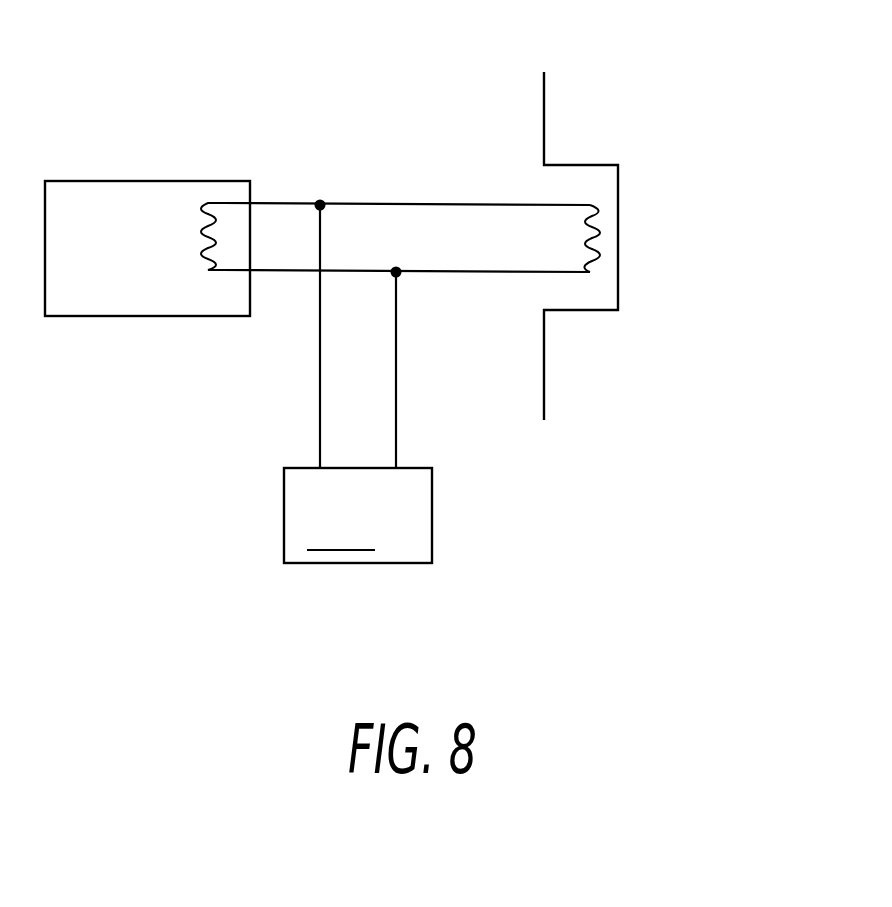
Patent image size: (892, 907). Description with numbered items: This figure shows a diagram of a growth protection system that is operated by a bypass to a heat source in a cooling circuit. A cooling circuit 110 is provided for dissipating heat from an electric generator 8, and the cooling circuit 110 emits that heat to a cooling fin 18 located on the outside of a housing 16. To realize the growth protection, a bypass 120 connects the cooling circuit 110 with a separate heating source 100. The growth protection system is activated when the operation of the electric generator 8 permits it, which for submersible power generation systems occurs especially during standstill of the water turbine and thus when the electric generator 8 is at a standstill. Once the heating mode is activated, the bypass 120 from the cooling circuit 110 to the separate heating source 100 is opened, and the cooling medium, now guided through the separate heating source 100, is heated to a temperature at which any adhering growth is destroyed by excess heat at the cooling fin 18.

The electric generator 8 is at (147, 248).
The housing 16 is at (544, 117).
The cooling fin 18 is at (618, 243).
The separate heating source 100 is at (358, 515).
The cooling circuit 110 is at (400, 205).
The bypass 120 is at (396, 385).